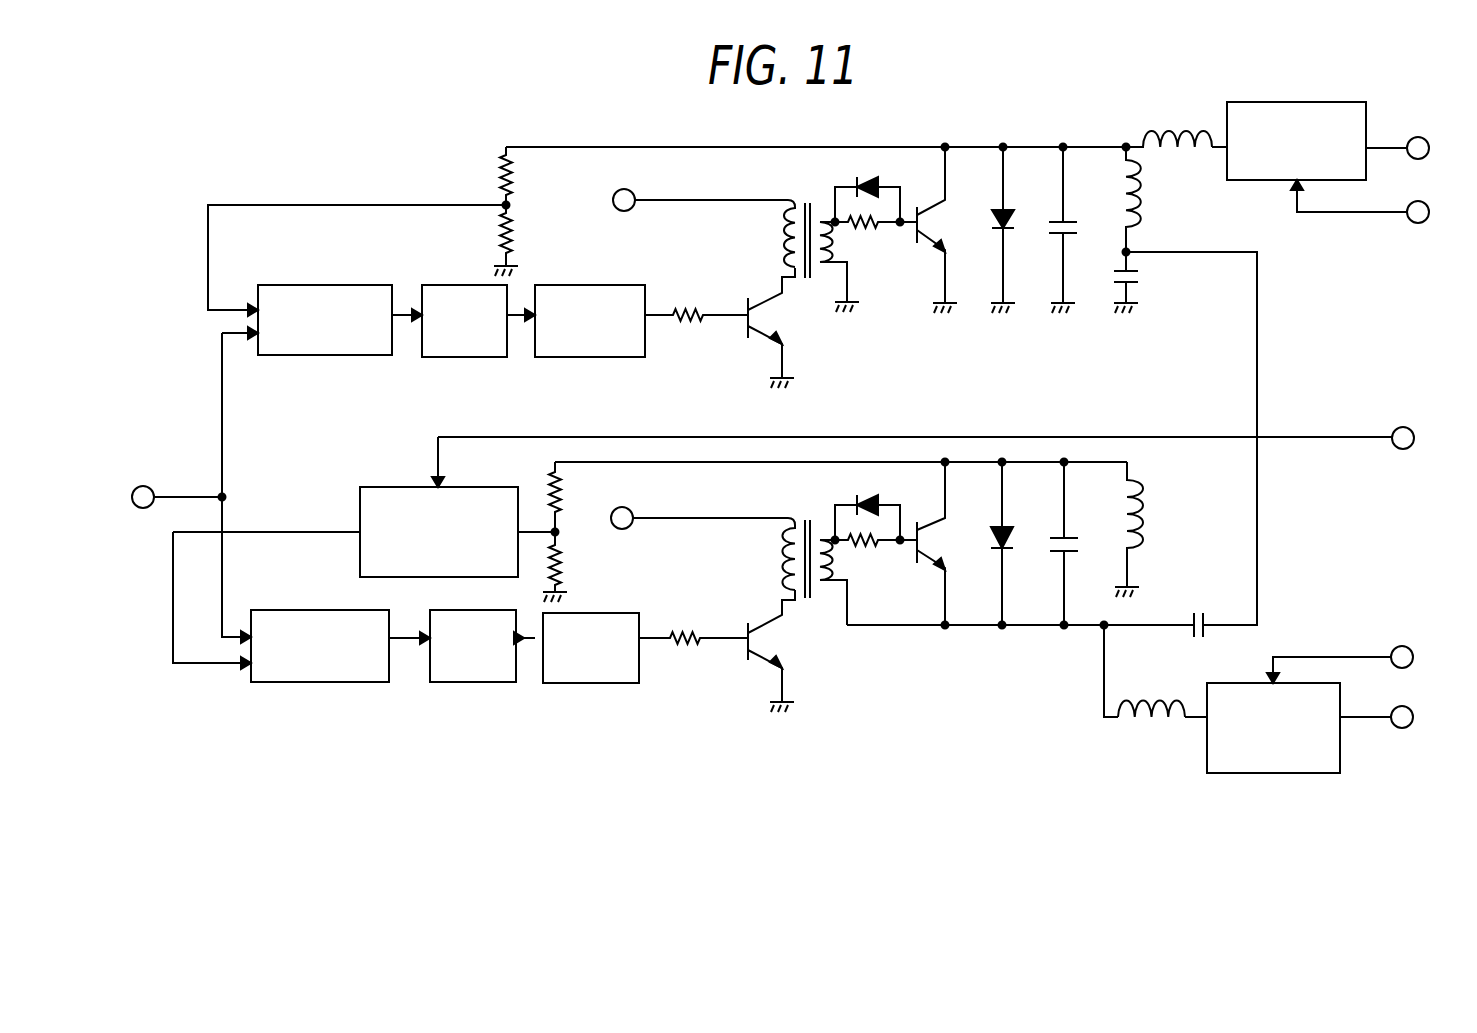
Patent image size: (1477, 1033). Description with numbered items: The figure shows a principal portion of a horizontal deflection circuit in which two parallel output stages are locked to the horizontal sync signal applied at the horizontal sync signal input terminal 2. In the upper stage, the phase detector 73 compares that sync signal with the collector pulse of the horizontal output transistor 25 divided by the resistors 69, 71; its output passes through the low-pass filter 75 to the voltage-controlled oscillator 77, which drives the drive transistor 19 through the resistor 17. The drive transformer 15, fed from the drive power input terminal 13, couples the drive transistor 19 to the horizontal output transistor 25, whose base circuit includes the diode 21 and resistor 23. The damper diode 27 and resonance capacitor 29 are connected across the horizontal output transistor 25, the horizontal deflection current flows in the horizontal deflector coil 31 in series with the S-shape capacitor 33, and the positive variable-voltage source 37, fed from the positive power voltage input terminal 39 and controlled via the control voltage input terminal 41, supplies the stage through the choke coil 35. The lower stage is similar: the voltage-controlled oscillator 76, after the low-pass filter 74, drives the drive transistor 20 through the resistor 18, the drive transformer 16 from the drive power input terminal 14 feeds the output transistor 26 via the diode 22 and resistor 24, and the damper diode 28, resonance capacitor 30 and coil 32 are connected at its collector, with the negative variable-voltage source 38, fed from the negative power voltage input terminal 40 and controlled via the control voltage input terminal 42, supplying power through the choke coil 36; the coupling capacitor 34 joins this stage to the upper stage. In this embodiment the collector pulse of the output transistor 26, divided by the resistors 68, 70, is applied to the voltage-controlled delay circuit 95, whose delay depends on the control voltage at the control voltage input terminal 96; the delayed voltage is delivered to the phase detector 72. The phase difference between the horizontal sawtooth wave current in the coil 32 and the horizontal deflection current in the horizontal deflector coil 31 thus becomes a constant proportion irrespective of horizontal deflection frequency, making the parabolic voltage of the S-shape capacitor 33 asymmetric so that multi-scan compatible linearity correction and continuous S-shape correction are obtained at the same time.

The horizontal sync signal input terminal 2 is at (148, 486).
The drive power input terminal 13 is at (617, 191).
The drive power input terminal 14 is at (613, 508).
The drive transformer 15 is at (803, 200).
The drive transformer 16 is at (802, 510).
The resistor 17 is at (691, 305).
The resistor 18 is at (686, 625).
The drive transistor 19 is at (759, 298).
The drive transistor 20 is at (757, 618).
The diode 21 is at (850, 180).
The diode 22 is at (850, 498).
The resistor 23 is at (866, 230).
The resistor 24 is at (860, 551).
The horizontal output transistor 25 is at (938, 220).
The output transistor 26 is at (940, 549).
The damper diode 27 is at (1010, 210).
The damper diode 28 is at (1010, 519).
The resonance capacitor 29 is at (1072, 218).
The resonance capacitor 30 is at (1072, 533).
The horizontal deflector coil 31 is at (1150, 210).
The coil 32 is at (1150, 522).
The S-shape capacitor 33 is at (1138, 273).
The coupling capacitor 34 is at (1201, 613).
The choke coil 35 is at (1178, 148).
The choke coil 36 is at (1148, 695).
The positive variable-voltage source 37 is at (1322, 102).
The negative variable-voltage source 38 is at (1345, 698).
The positive power voltage input terminal 39 is at (1426, 140).
The negative power voltage input terminal 40 is at (1411, 710).
The control voltage input terminal 41 is at (1426, 206).
The control voltage input terminal 42 is at (1411, 650).
The resistor 68 is at (547, 483).
The resistor 69 is at (500, 173).
The resistor 70 is at (561, 563).
The resistor 71 is at (513, 244).
The phase detector 72 is at (362, 610).
The phase detector 73 is at (357, 285).
The low-pass filter 74 is at (487, 610).
The low-pass filter 75 is at (458, 285).
The voltage-controlled oscillator 76 is at (610, 613).
The voltage-controlled oscillator 77 is at (597, 285).
The voltage-controlled delay circuit 95 is at (469, 487).
The control voltage input terminal 96 is at (1412, 432).